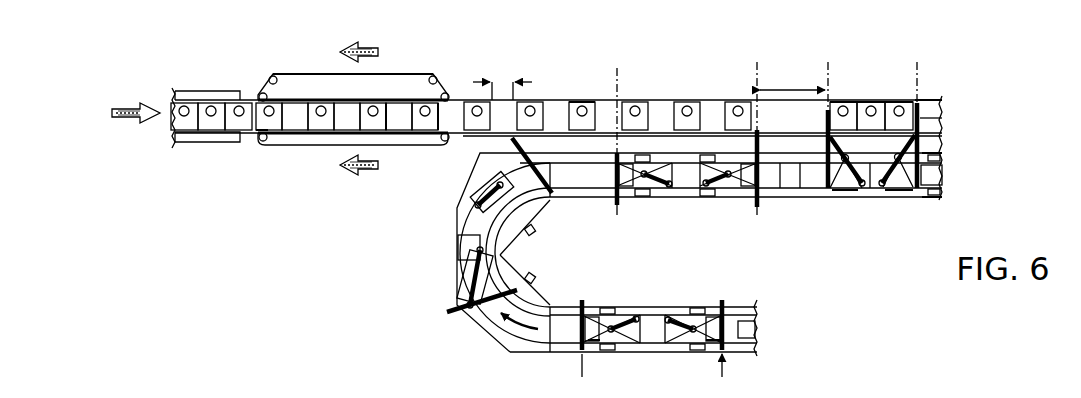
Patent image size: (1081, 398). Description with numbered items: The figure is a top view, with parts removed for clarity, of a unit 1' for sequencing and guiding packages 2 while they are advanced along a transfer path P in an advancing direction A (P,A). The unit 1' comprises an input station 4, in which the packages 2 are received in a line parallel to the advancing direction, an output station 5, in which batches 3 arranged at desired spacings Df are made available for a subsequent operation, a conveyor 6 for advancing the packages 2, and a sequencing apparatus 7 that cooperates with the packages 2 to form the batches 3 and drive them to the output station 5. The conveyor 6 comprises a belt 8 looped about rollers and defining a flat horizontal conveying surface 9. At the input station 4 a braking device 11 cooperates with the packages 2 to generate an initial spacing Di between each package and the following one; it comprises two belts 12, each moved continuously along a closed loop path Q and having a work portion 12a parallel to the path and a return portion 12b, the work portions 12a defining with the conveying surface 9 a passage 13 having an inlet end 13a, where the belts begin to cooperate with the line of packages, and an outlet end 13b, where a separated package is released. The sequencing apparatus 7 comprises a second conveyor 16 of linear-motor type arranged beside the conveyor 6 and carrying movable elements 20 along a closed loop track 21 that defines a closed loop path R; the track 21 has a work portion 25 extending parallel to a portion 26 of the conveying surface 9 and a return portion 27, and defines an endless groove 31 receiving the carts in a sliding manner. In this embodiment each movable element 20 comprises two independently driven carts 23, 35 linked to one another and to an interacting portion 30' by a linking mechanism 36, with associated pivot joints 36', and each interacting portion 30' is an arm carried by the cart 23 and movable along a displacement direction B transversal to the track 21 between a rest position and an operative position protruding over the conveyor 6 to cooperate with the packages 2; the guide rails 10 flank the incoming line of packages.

The unit 1' is at (107, 79).
The packages 2 is at (190, 106).
The batches 3 is at (876, 96).
The input station 4 is at (306, 52).
The output station 5 is at (952, 105).
The conveyor 6 is at (928, 103).
The sequencing apparatus 7 is at (772, 333).
The belt 8 is at (935, 118).
The conveying surface 9 is at (710, 104).
The guide rails 10 is at (182, 97).
The braking device 11 is at (418, 60).
The belts 12 is at (394, 70).
The work portion 12a is at (293, 100).
The return portion 12b is at (310, 74).
The passage 13 is at (395, 110).
The inlet end 13a is at (262, 134).
The outlet end 13b is at (442, 118).
The second conveyor 16 is at (510, 355).
The movable elements 20 is at (645, 200).
The track 21 is at (458, 220).
The cart 23 is at (845, 198).
The work portion 25 is at (577, 188).
The portion 26 is at (584, 78).
The return portion 27 is at (748, 330).
The interacting portion 30' is at (721, 219).
The groove 31 is at (936, 175).
The cart 35 is at (860, 200).
The linking mechanism 36 is at (676, 272).
The pivot joints in transfer section 36' is at (881, 110).
The closed loop path Q is at (355, 50).
The path and advancing direction P,A is at (133, 122).
The displacement direction B is at (622, 70).
The initial spacing Di is at (492, 80).
The desired spacing Df is at (790, 88).
The closed loop path R is at (533, 320).